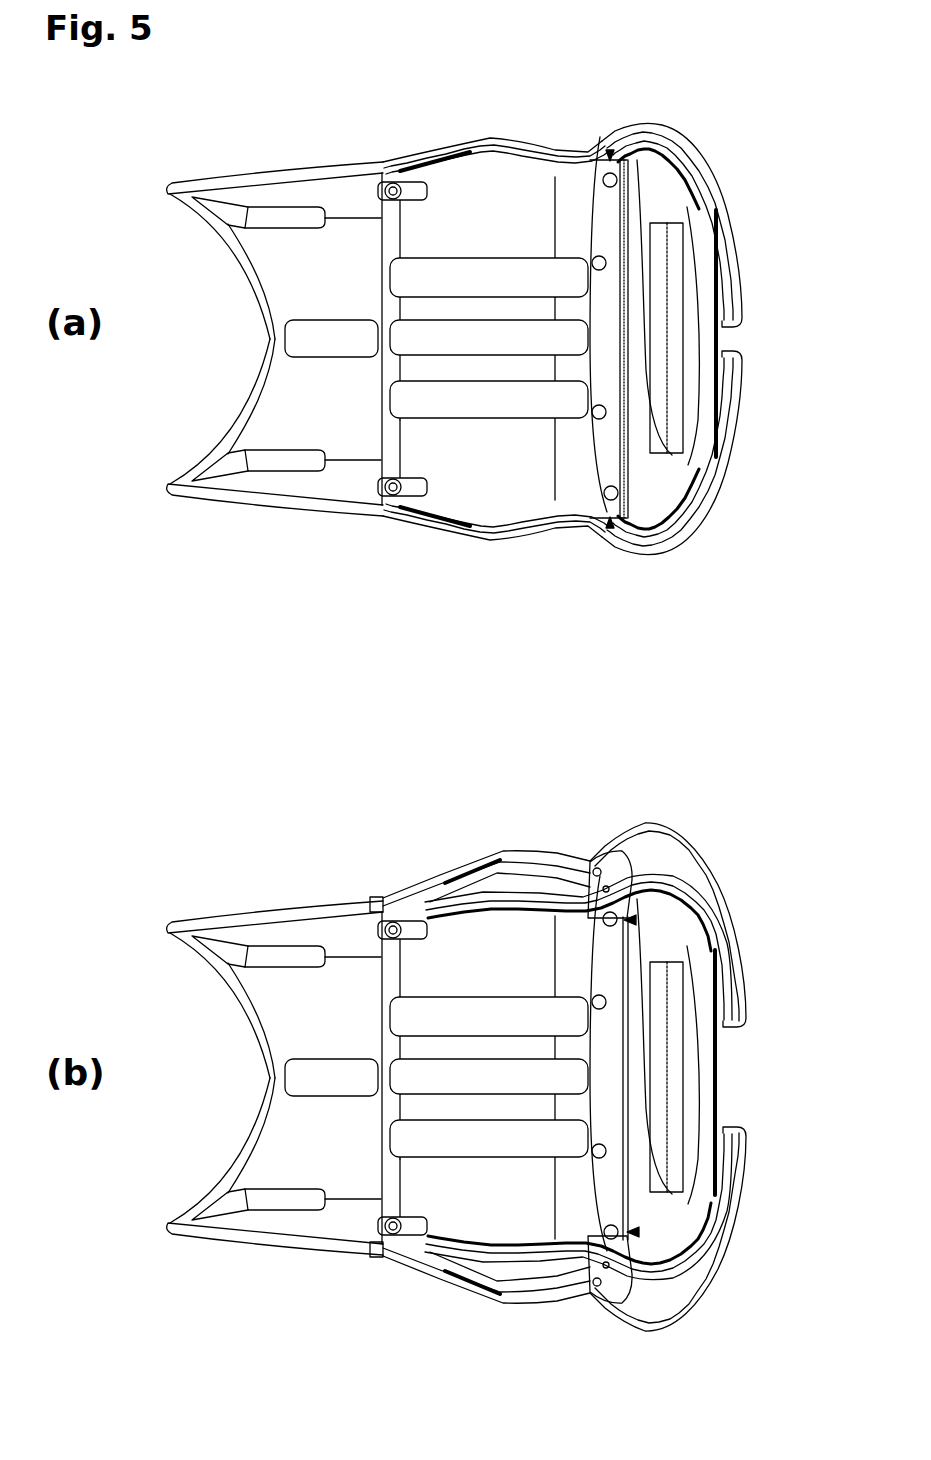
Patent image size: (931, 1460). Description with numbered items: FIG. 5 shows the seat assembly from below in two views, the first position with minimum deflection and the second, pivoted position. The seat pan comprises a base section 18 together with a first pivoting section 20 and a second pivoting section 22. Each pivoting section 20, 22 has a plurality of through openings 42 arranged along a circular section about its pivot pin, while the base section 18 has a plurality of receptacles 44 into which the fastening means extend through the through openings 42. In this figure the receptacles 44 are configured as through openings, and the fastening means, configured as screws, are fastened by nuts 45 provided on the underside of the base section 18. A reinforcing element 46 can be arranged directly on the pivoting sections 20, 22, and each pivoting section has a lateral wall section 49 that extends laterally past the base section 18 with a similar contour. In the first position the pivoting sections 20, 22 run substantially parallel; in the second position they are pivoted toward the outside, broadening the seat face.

The base section 18 is at (300, 343).
The first pivoting section 20 is at (727, 257).
The second pivoting section 22 is at (725, 408).
The through openings 42 is at (592, 855).
The receptacles 44 is at (611, 148).
The nuts 45 is at (606, 413).
The reinforcing element 46 is at (600, 323).
The lateral wall section 49 is at (533, 150).